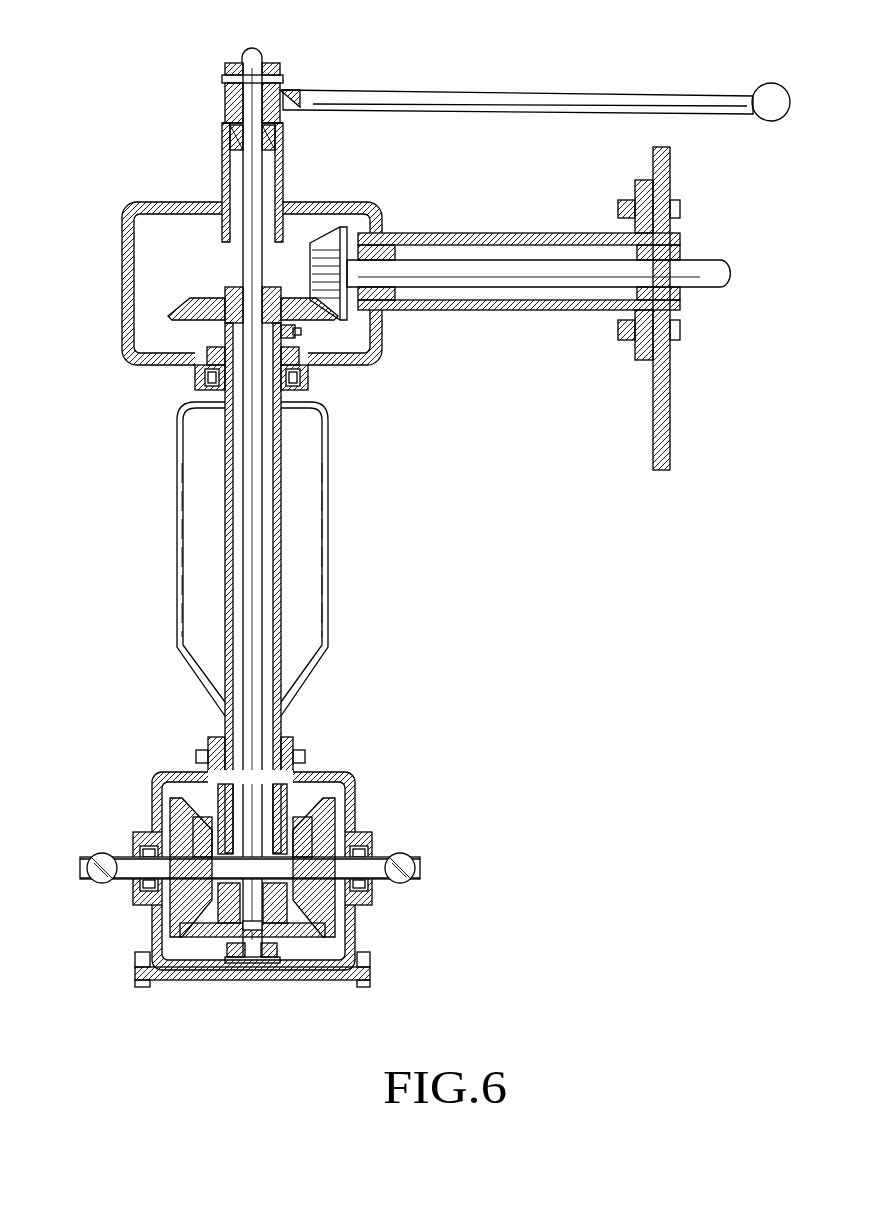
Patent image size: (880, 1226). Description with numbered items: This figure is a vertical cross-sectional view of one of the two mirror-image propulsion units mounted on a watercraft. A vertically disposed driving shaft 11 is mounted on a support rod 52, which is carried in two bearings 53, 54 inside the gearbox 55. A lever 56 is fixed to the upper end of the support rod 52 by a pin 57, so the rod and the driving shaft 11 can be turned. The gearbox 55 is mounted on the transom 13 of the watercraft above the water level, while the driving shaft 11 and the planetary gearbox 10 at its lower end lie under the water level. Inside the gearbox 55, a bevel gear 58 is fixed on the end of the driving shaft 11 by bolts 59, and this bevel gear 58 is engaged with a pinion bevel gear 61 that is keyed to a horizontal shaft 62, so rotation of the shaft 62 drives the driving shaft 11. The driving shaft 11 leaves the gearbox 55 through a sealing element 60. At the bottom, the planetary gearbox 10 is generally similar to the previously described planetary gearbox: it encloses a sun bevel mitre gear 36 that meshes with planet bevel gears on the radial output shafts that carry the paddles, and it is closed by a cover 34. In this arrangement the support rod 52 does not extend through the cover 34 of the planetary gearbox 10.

The planetary gearbox 10 is at (113, 803).
The driving shaft 11 is at (223, 720).
The transom 13 is at (663, 455).
The cover 34 is at (228, 970).
The sun bevel mitre gear 36 is at (210, 927).
The support rod 52 is at (250, 738).
The bearing 53 is at (222, 207).
The bearing 54 is at (225, 130).
The gearbox 55 is at (125, 262).
The lever 56 is at (442, 103).
The pin 57 is at (287, 63).
The bevel gear 58 is at (170, 302).
The bolts 59 is at (295, 333).
The sealing element 60 is at (207, 387).
The pinion bevel gear 61 is at (330, 232).
The shaft 62 is at (695, 273).